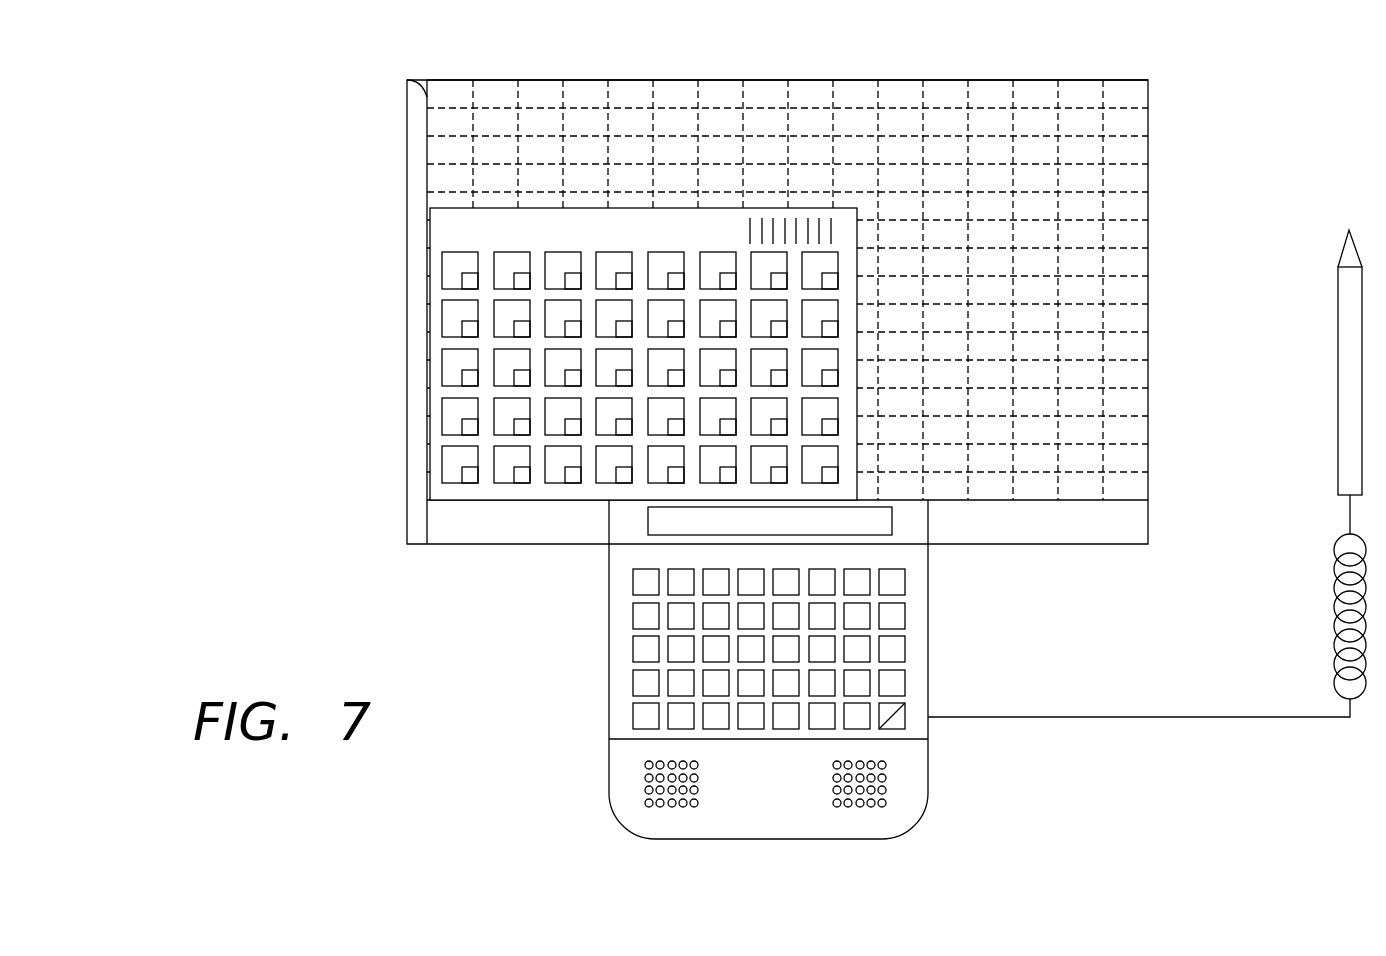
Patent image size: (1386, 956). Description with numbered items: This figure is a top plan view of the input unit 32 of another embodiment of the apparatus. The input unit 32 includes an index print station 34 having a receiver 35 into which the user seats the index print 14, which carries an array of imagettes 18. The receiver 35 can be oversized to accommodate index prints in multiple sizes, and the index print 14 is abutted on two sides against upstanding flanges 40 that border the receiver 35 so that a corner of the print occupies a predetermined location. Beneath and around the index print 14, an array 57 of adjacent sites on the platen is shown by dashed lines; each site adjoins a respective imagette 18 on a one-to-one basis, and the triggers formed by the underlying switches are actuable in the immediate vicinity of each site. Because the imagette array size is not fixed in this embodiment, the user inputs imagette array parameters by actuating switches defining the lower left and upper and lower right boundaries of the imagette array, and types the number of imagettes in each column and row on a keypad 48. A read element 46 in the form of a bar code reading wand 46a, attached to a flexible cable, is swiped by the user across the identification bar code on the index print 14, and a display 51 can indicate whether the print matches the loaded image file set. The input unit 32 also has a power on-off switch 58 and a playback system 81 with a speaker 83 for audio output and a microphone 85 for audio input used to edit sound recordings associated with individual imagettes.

The index print 14 is at (426, 320).
The imagettes 18 is at (443, 461).
The input unit 32 is at (405, 204).
The index print station 34 is at (407, 108).
The receiver 35 is at (586, 80).
The flanges 40 is at (407, 80).
The read element 46 is at (1147, 473).
The bar code reading wand 46a is at (1350, 248).
The keypad 48 is at (609, 685).
The display 51 is at (648, 536).
The array of sites 57 is at (908, 115).
The power on-off switch 58 is at (906, 708).
The playback system 81 is at (766, 804).
The speaker 83 is at (660, 803).
The microphone 85 is at (882, 791).